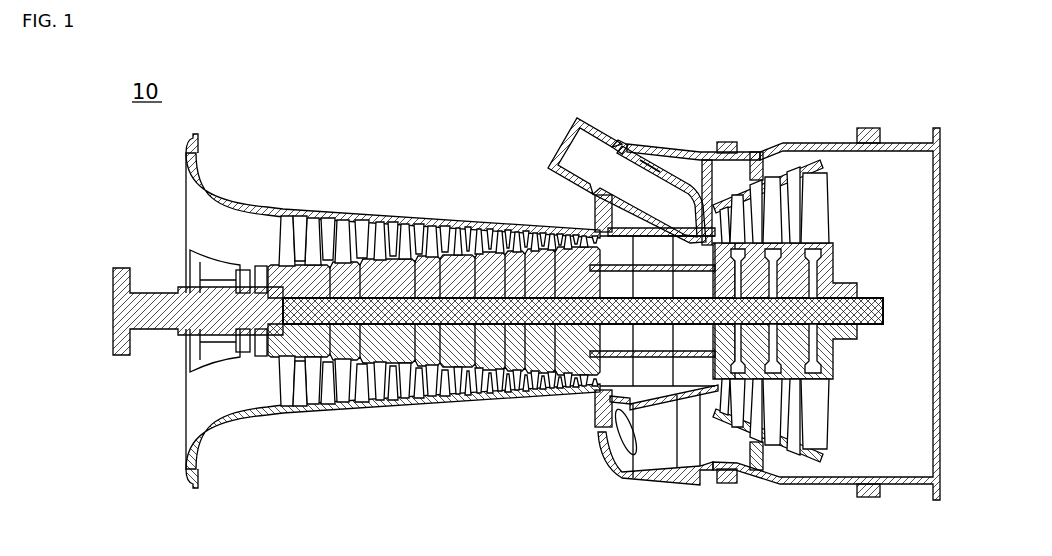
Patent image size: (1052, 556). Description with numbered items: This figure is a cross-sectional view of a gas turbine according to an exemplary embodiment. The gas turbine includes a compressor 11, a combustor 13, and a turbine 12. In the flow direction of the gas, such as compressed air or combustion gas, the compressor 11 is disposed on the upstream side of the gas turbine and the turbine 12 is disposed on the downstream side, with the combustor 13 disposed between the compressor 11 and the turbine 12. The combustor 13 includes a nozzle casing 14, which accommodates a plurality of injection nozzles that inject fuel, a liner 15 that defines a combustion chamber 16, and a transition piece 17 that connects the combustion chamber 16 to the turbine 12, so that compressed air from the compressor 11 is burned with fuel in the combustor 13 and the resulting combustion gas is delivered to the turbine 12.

The compressor 11 is at (337, 430).
The turbine 12 is at (836, 455).
The combustor 13 is at (654, 268).
The nozzle casing 14 is at (590, 120).
The liner 15 is at (633, 146).
The combustion chamber 16 is at (595, 200).
The transition piece 17 is at (685, 148).